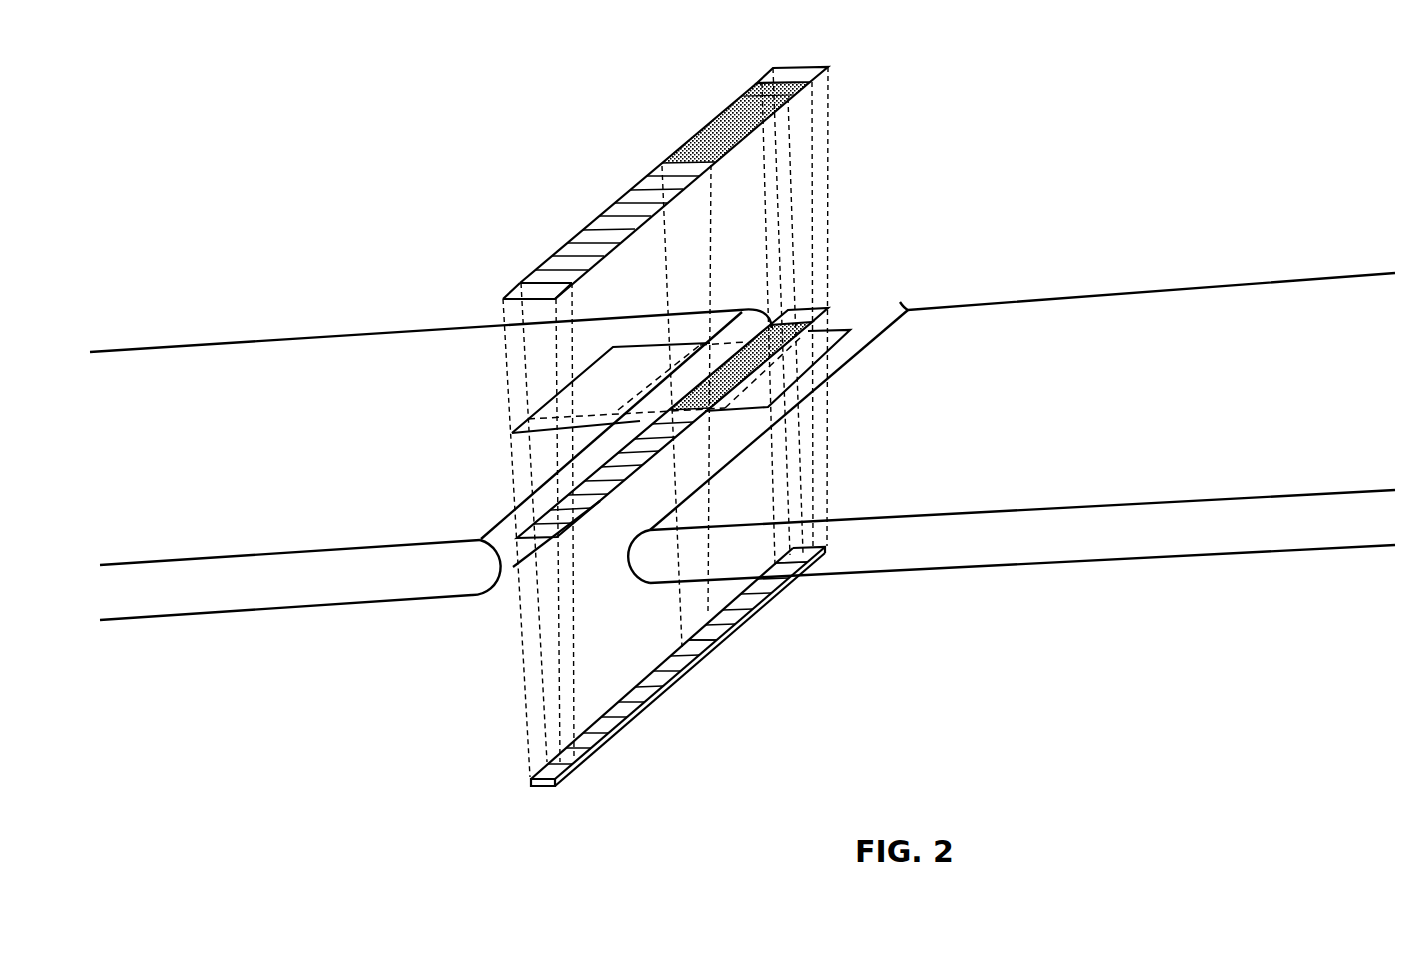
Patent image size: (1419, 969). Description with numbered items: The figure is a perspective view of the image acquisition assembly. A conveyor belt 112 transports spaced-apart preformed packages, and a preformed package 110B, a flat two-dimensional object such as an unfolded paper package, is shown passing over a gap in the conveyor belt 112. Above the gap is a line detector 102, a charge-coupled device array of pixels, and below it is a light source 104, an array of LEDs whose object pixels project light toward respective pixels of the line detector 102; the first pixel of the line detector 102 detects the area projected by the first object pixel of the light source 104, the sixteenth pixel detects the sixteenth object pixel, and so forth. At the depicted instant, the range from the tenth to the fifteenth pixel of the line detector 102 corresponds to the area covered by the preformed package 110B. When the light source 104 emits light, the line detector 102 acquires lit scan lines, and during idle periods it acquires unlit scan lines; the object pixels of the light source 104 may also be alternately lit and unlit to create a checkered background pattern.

The line detector 102 is at (633, 238).
The light source 104 is at (663, 700).
The preformed package 110B is at (808, 330).
The conveyor belt 112 is at (236, 611).